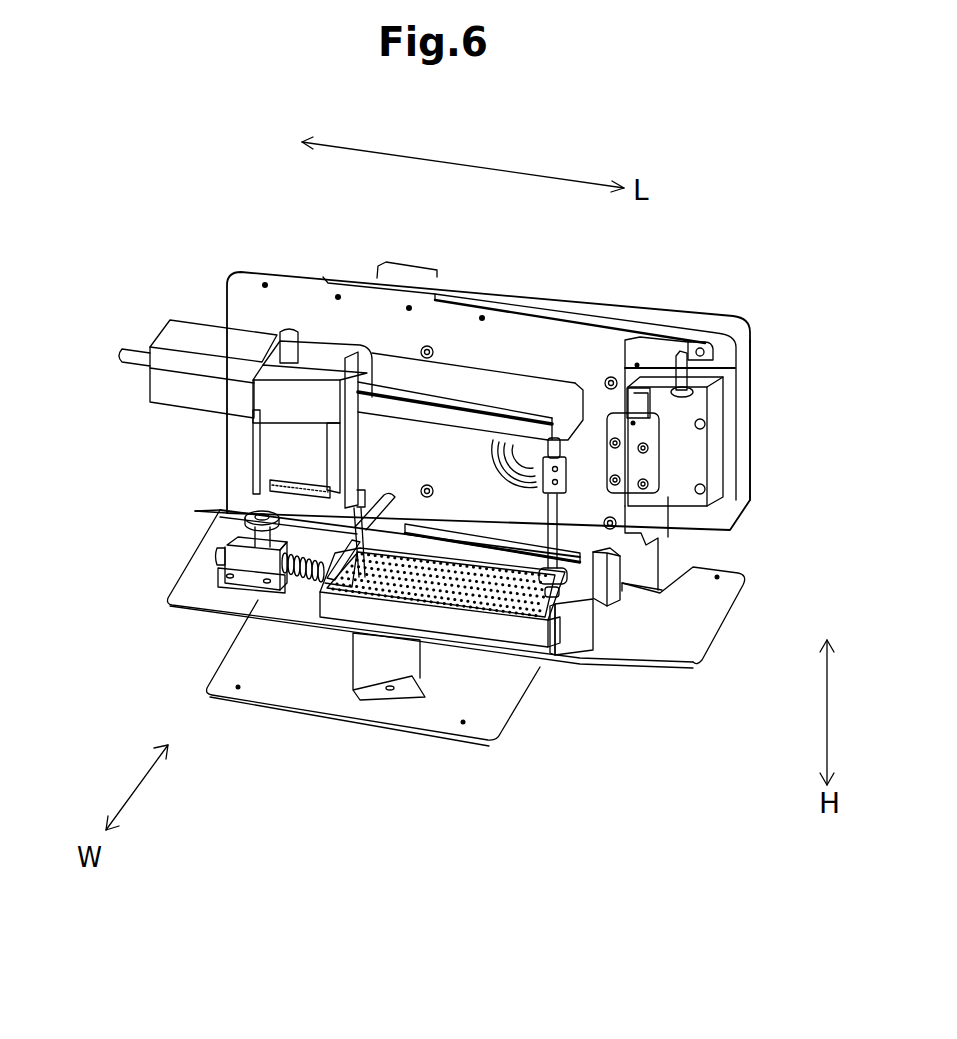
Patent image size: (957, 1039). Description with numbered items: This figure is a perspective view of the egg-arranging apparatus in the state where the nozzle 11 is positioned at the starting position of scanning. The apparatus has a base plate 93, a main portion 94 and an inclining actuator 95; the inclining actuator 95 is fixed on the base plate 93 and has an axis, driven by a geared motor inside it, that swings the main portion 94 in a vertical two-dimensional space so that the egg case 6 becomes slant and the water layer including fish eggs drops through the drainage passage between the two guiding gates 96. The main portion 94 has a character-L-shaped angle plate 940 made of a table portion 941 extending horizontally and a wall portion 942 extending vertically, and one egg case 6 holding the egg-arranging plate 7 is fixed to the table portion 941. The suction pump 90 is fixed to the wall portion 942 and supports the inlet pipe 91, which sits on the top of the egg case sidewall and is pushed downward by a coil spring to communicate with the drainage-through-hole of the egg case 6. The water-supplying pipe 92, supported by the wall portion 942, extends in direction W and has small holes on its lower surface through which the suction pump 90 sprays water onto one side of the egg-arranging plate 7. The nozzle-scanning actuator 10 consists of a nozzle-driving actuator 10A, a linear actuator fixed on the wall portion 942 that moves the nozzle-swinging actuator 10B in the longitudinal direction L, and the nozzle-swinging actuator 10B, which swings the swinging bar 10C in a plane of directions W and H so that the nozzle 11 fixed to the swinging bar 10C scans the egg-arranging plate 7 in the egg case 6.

The egg case 6 is at (363, 610).
The egg-arranging plate 7 is at (508, 605).
The nozzle-scanning actuator 10 is at (140, 335).
The nozzle-driving actuator 10A is at (171, 413).
The nozzle-swinging actuator 10B is at (277, 455).
The swinging bar 10C is at (424, 397).
The nozzle 11 is at (338, 582).
The suction pump 90 is at (688, 451).
The inlet pipe 91 is at (657, 547).
The water-supplying pipe 92 is at (529, 409).
The base plate 93 is at (475, 703).
The main portion 94 is at (244, 268).
The inclining actuator 95 is at (711, 308).
The guiding gates 96 is at (578, 640).
The angle plate 940 is at (215, 615).
The table portion 941 is at (705, 605).
The wall portion 942 is at (240, 482).